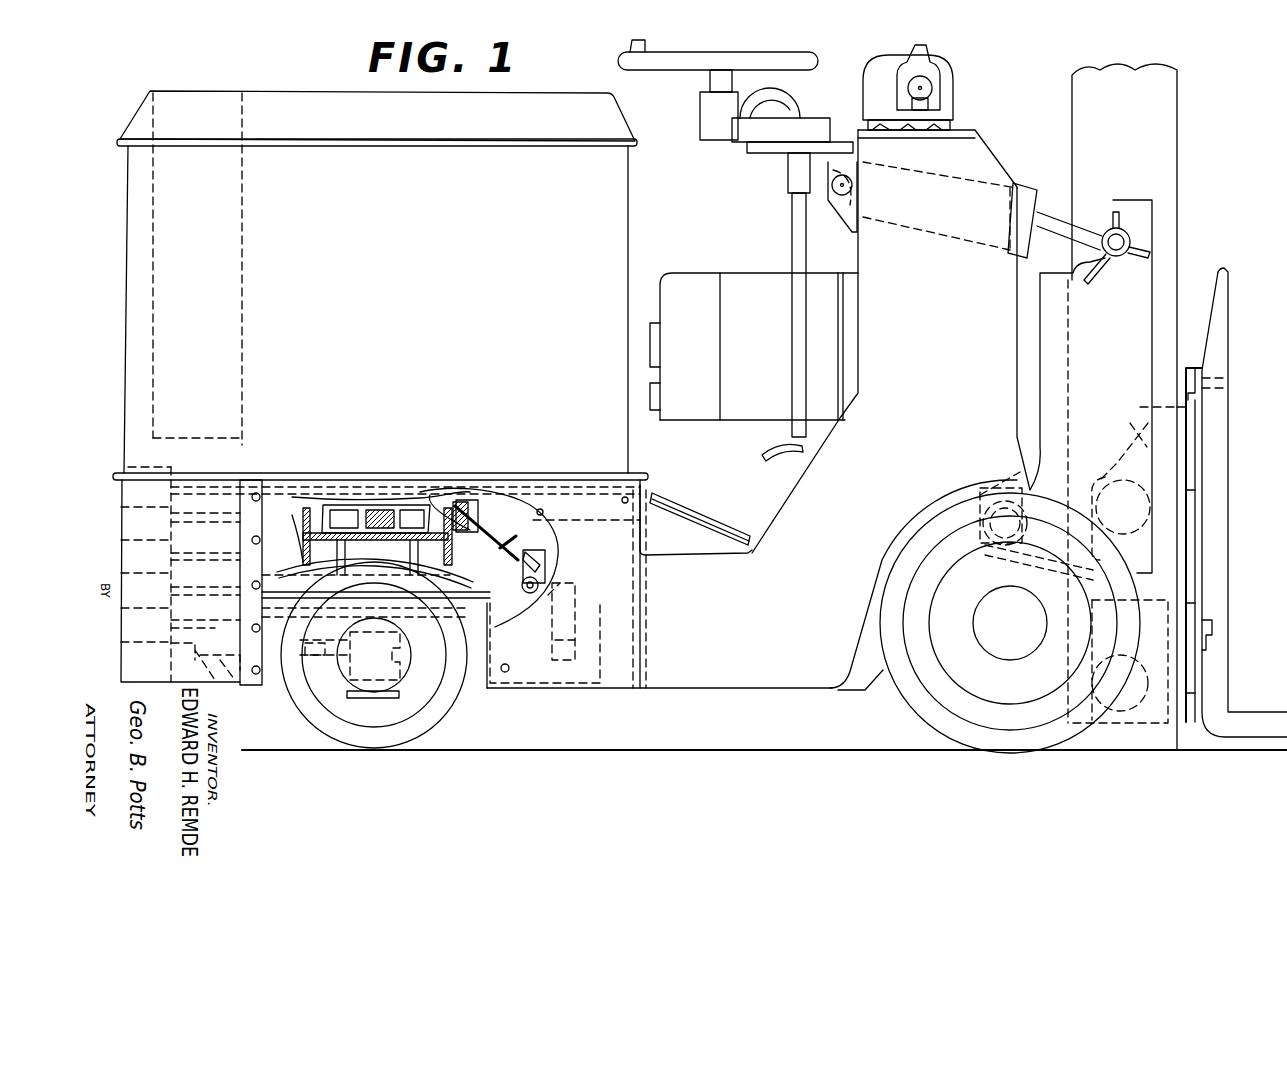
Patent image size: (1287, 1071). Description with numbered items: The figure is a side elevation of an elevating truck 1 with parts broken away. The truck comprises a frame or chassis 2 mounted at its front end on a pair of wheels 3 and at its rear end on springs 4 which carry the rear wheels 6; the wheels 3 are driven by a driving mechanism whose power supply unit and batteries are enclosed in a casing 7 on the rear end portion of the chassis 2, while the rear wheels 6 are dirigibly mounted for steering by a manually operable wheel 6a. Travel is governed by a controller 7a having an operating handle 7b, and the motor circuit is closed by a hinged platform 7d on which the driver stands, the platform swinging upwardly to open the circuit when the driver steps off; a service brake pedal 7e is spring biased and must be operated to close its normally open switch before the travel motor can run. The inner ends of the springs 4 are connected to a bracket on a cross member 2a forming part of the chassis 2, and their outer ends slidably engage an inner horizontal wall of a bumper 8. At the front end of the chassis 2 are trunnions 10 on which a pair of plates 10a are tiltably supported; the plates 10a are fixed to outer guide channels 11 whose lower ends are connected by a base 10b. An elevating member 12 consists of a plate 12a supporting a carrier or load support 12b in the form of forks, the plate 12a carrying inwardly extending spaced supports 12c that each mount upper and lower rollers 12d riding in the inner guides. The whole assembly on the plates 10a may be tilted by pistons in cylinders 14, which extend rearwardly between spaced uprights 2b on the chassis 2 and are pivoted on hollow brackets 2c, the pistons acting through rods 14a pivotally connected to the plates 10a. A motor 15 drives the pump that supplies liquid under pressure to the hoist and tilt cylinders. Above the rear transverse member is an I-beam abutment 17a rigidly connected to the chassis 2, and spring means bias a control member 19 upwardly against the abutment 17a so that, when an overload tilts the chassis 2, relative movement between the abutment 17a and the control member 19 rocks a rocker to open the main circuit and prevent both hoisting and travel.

The truck 1 is at (710, 720).
The frame or chassis 2 is at (797, 678).
The cross member 2a is at (560, 587).
The uprights 2b is at (1005, 328).
The hollow brackets 2c is at (848, 215).
The wheels 3 is at (924, 707).
The springs 4 is at (468, 622).
The rear wheels 6 is at (307, 712).
The wheel 6a is at (641, 63).
The casing 7 is at (628, 205).
The controller 7a is at (945, 103).
The operating handle 7b is at (937, 67).
The hinged platform 7d is at (697, 530).
The service brake pedal 7e is at (775, 450).
The bumper 8 is at (132, 490).
The trunnions 10 is at (993, 545).
The plates 10a is at (1050, 373).
The base 10b is at (1160, 722).
The outer guide channels 11 is at (1162, 124).
The elevating member 12 is at (1258, 587).
The plate 12a is at (1195, 538).
The carrier or load support 12b is at (1250, 630).
The supports 12c is at (1177, 404).
The rollers 12d is at (1100, 722).
The cylinders 14 is at (943, 222).
The rods 14a is at (1083, 232).
The motor 15 is at (692, 290).
The abutment 17a is at (292, 515).
The control member 19 is at (496, 530).